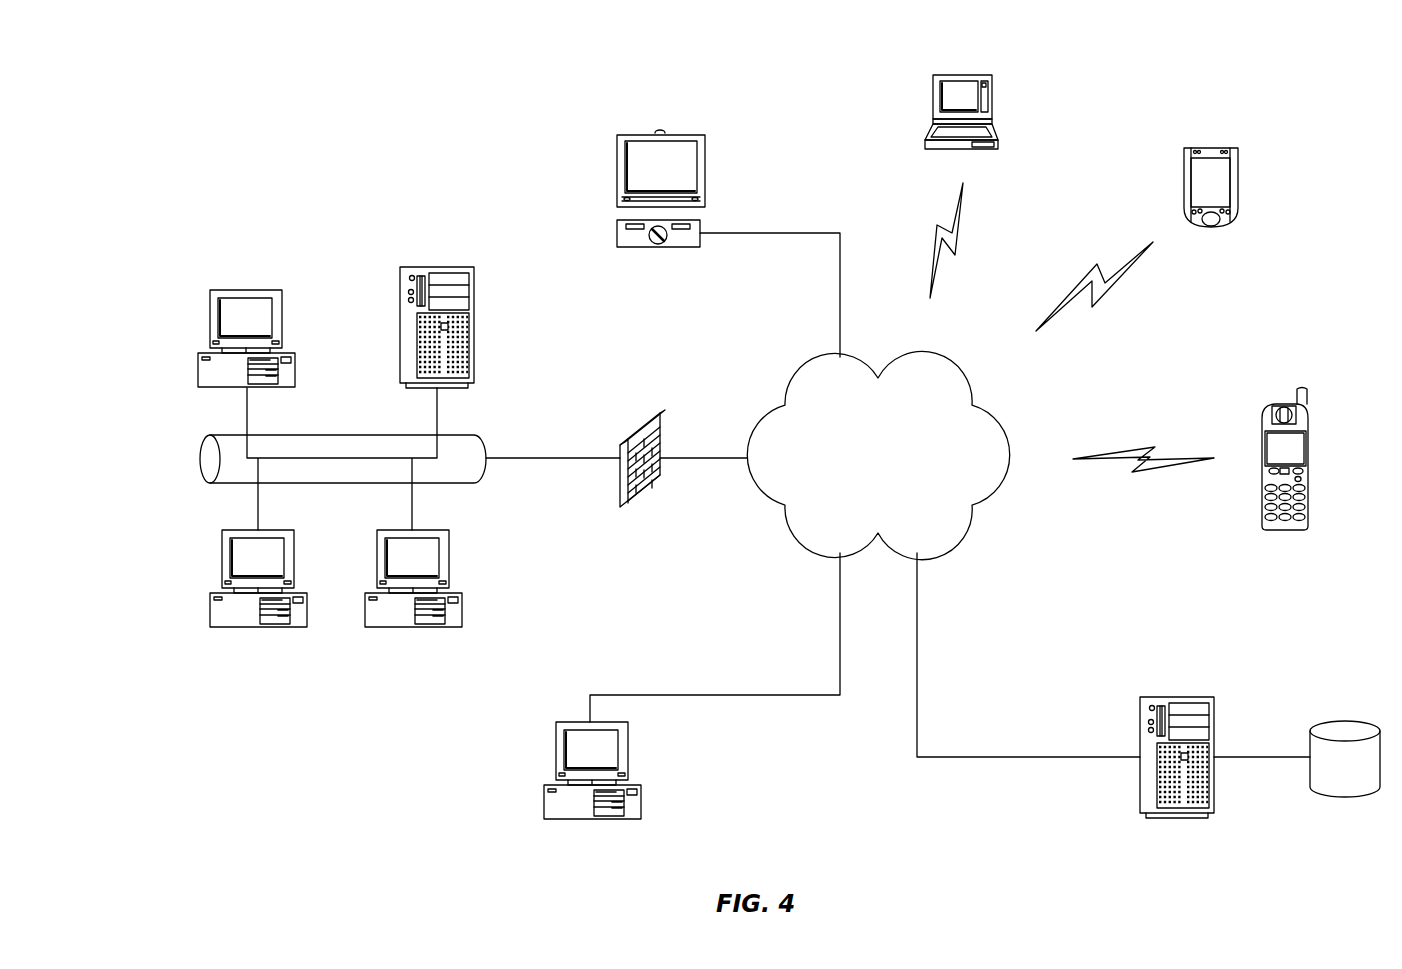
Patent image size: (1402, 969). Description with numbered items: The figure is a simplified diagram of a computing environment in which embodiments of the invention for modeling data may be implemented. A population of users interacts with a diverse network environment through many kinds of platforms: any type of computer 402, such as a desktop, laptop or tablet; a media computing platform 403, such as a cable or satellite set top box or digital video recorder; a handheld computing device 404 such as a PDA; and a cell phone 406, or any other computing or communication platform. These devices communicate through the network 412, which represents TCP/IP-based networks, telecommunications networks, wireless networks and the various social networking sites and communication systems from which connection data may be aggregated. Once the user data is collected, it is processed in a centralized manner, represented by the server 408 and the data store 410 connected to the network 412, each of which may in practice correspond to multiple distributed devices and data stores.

The computer 402 is at (210, 325).
The media computing platform 403 is at (615, 230).
The handheld computing device 404 is at (1190, 148).
The cell phone 406 is at (1265, 410).
The server 408 is at (1155, 697).
The data store 410 is at (1344, 720).
The network 412 is at (802, 375).